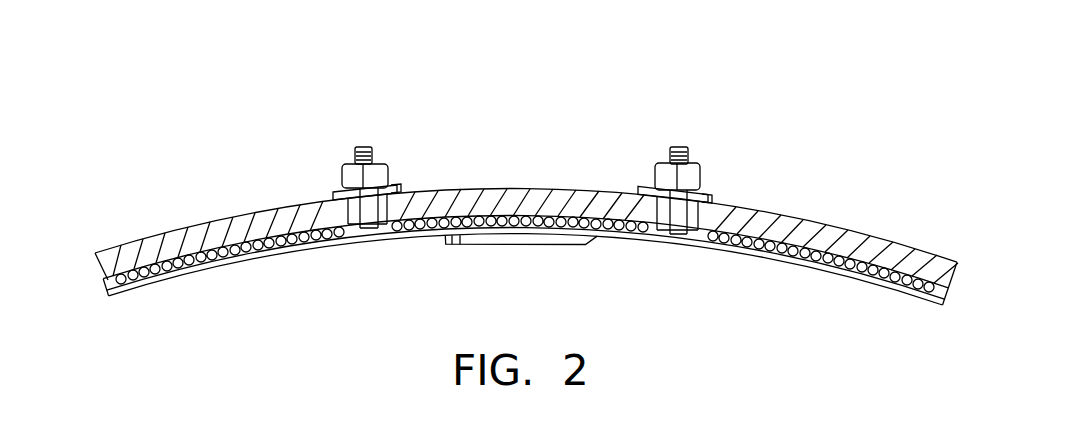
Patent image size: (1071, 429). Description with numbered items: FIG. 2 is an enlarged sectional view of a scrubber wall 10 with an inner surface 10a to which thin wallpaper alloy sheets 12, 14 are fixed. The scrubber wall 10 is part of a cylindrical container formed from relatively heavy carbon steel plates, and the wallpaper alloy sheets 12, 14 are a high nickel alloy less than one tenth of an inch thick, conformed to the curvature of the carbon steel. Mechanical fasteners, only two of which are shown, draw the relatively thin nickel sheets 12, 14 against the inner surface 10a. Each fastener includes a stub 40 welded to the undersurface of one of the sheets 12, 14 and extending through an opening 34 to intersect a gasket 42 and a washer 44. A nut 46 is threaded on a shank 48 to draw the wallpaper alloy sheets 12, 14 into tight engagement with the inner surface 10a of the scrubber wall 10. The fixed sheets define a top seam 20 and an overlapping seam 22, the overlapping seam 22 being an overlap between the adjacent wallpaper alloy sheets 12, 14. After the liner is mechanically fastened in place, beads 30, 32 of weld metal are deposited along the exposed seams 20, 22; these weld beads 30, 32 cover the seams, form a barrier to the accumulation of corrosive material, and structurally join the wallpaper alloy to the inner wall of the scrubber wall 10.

The scrubber wall 10 is at (871, 231).
The inner surface 10a is at (198, 263).
The wallpaper alloy sheet 12 is at (154, 283).
The wallpaper alloy sheet 14 is at (810, 262).
The top seam 20 is at (273, 240).
The overlapping seam 22 is at (458, 244).
The weld bead 30 is at (242, 262).
The weld bead 32 is at (452, 245).
The opening 34 is at (400, 232).
The stub 40 is at (369, 232).
The gasket 42 is at (401, 189).
The washer 44 is at (338, 190).
The nut 46 is at (386, 166).
The shank 48 is at (356, 150).